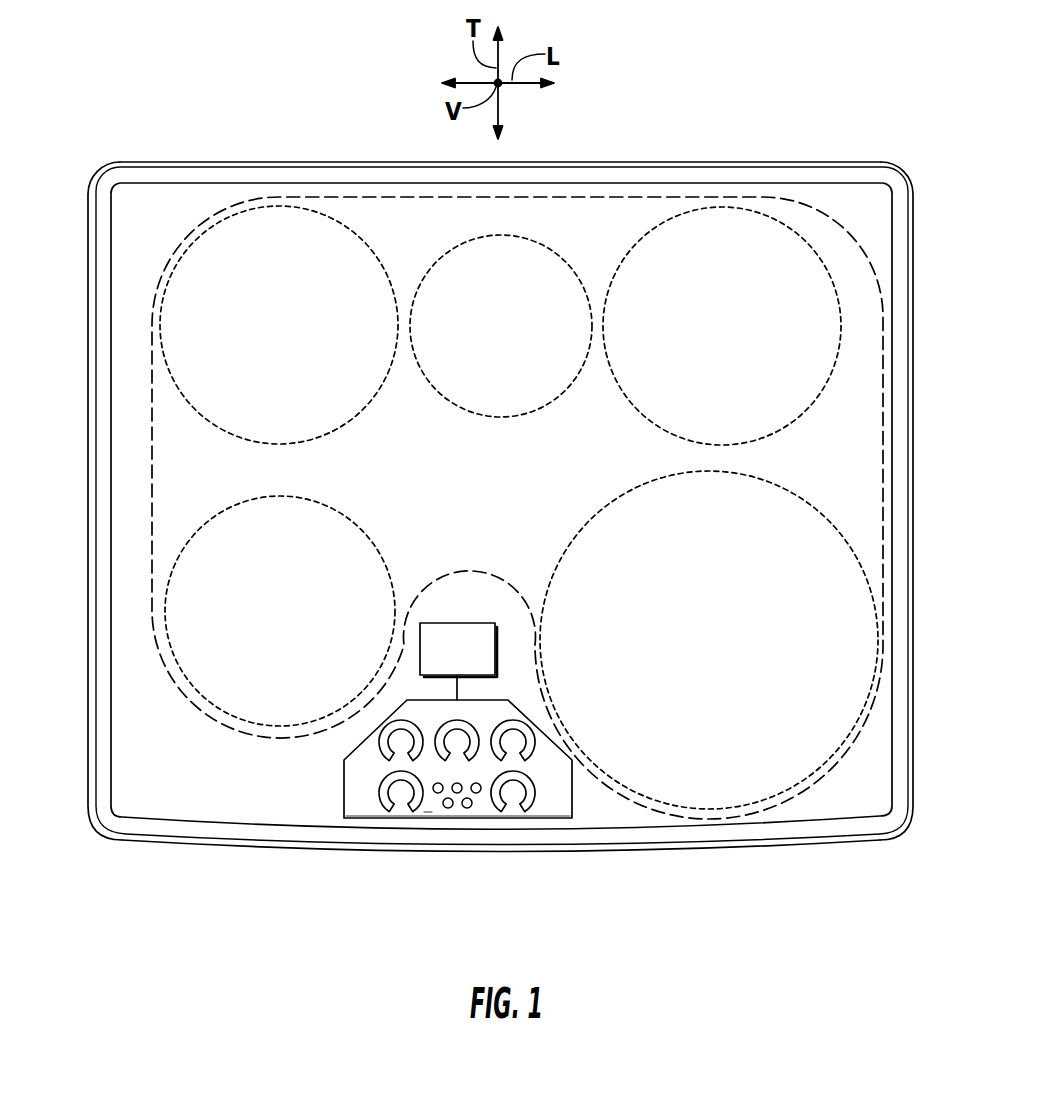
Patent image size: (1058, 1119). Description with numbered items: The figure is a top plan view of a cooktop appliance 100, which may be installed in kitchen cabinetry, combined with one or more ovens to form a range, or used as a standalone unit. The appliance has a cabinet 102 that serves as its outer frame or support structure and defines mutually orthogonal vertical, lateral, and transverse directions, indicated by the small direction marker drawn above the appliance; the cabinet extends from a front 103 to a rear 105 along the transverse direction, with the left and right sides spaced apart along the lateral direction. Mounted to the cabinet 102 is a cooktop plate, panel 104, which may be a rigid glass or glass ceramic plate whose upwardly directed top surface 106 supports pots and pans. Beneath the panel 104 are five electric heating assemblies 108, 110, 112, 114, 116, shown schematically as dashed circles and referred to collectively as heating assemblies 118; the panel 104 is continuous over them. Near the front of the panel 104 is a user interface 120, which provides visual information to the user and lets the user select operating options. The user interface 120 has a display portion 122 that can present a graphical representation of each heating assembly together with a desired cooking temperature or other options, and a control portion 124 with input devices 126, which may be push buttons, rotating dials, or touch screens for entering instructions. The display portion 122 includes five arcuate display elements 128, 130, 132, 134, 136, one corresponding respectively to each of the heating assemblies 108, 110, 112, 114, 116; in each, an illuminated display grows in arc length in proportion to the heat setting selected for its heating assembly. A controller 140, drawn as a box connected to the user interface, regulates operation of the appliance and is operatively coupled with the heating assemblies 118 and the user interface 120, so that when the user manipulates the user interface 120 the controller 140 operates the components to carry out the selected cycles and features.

The cooktop appliance 100 is at (828, 70).
The cabinet 102 is at (100, 753).
The front 103 is at (755, 850).
The panel 104 is at (854, 494).
The rear 105 is at (688, 161).
The top surface 106 is at (178, 791).
The heating assembly 108 is at (358, 523).
The heating assembly 110 is at (203, 415).
The heating assembly 112 is at (503, 420).
The heating assembly 114 is at (813, 400).
The heating assembly 116 is at (650, 483).
The heating assemblies 118 is at (190, 235).
The user interface 120 is at (397, 805).
The display portion 122 is at (353, 797).
The control portion 124 is at (428, 813).
The input devices 126 is at (467, 807).
The display element 128 is at (412, 800).
The display element 130 is at (383, 745).
The display element 132 is at (477, 730).
The display element 134 is at (533, 748).
The display element 136 is at (530, 812).
The controller 140 is at (476, 661).